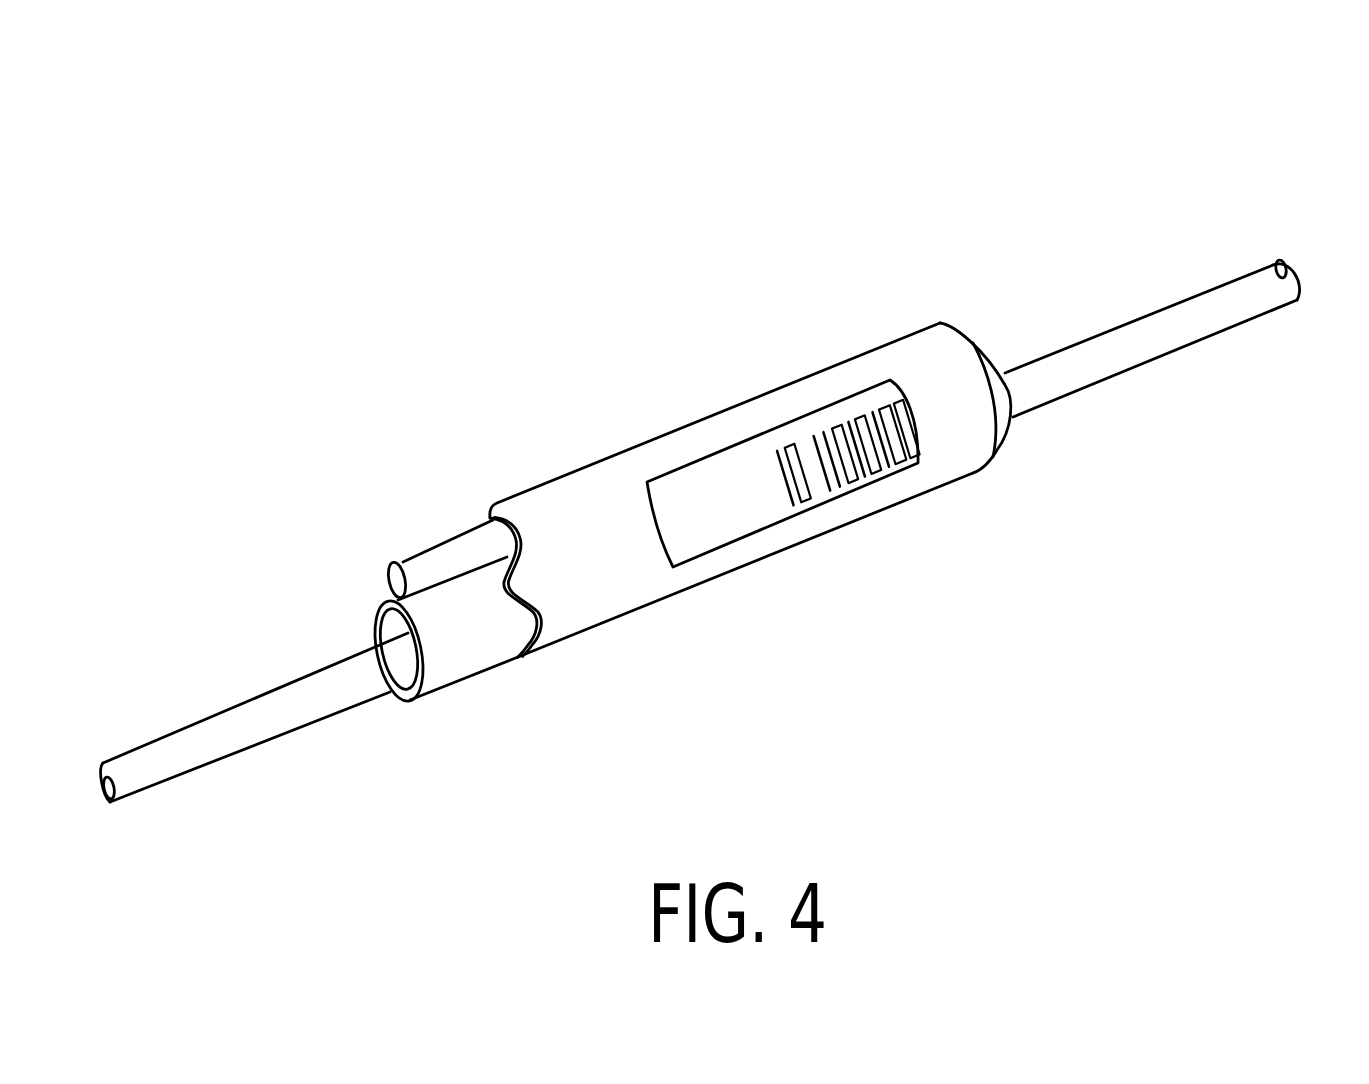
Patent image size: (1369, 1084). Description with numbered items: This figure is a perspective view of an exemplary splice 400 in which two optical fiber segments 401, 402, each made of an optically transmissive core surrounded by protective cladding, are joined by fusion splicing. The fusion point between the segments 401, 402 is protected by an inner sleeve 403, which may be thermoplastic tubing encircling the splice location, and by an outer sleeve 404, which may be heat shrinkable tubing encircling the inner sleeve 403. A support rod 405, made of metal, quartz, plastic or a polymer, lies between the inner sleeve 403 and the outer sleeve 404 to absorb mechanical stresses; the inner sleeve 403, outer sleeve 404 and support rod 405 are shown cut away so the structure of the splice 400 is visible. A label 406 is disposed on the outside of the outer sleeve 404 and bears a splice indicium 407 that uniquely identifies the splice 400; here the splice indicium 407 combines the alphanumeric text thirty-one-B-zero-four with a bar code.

The splice 400 is at (561, 184).
The optical fiber segment 401 is at (187, 745).
The optical fiber segment 402 is at (1132, 335).
The inner sleeve 403 is at (460, 665).
The outer sleeve 404 is at (587, 475).
The support rod 405 is at (427, 567).
The label 406 is at (888, 477).
The splice indicium 407 is at (773, 502).